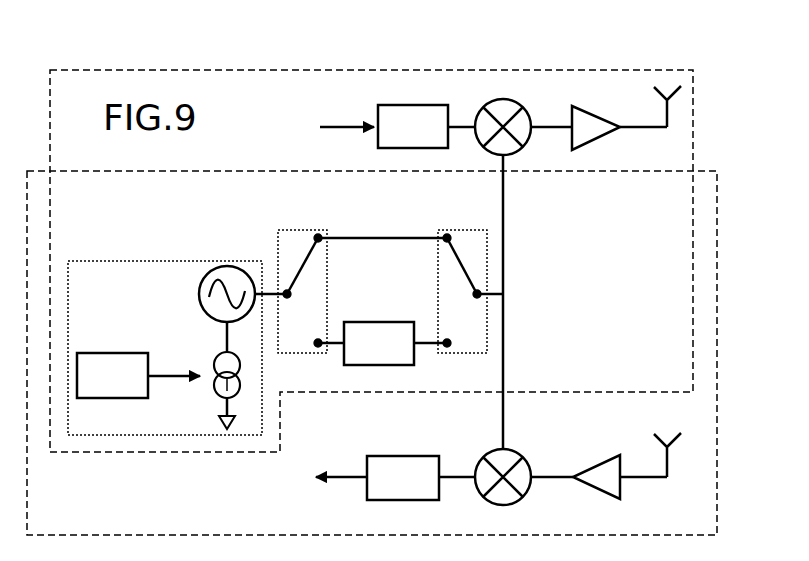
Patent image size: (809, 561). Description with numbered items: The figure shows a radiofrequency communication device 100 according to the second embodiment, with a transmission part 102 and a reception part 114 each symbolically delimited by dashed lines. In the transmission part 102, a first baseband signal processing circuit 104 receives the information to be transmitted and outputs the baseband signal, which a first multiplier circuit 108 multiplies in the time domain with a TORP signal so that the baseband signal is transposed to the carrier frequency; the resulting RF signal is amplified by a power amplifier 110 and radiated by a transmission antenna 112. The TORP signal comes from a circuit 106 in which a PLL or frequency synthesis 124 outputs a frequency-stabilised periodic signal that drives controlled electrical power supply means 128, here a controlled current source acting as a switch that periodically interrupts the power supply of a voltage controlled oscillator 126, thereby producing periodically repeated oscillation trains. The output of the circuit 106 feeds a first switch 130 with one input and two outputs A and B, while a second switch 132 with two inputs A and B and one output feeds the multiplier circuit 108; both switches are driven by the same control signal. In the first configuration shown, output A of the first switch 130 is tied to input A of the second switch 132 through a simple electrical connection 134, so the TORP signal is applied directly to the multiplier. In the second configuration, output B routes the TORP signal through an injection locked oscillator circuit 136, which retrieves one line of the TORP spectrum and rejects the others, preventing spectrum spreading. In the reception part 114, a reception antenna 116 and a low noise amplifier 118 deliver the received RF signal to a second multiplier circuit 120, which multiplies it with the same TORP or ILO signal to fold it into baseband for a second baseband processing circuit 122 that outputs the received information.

The radiofrequency communication device 100 is at (716, 69).
The transmission part 102 is at (620, 68).
The first baseband signal processing circuit 104 is at (418, 104).
The circuit generating the TORP signal 106 is at (168, 260).
The first multiplier circuit 108 is at (503, 99).
The power amplifier 110 is at (608, 110).
The transmission antenna 112 is at (673, 115).
The reception part 114 is at (718, 252).
The reception antenna 116 is at (672, 463).
The low noise amplifier 118 is at (608, 458).
The second multiplier circuit 120 is at (490, 450).
The second baseband processing circuit 122 is at (400, 455).
The PLL or frequency synthesis 124 is at (123, 352).
The voltage controlled oscillator 126 is at (197, 290).
The controlled electrical power supply means 128 is at (213, 358).
The first switch 130 is at (298, 229).
The second switch 132 is at (473, 229).
The electrical connection 134 is at (386, 236).
The injection locked oscillator circuit 136 is at (390, 320).